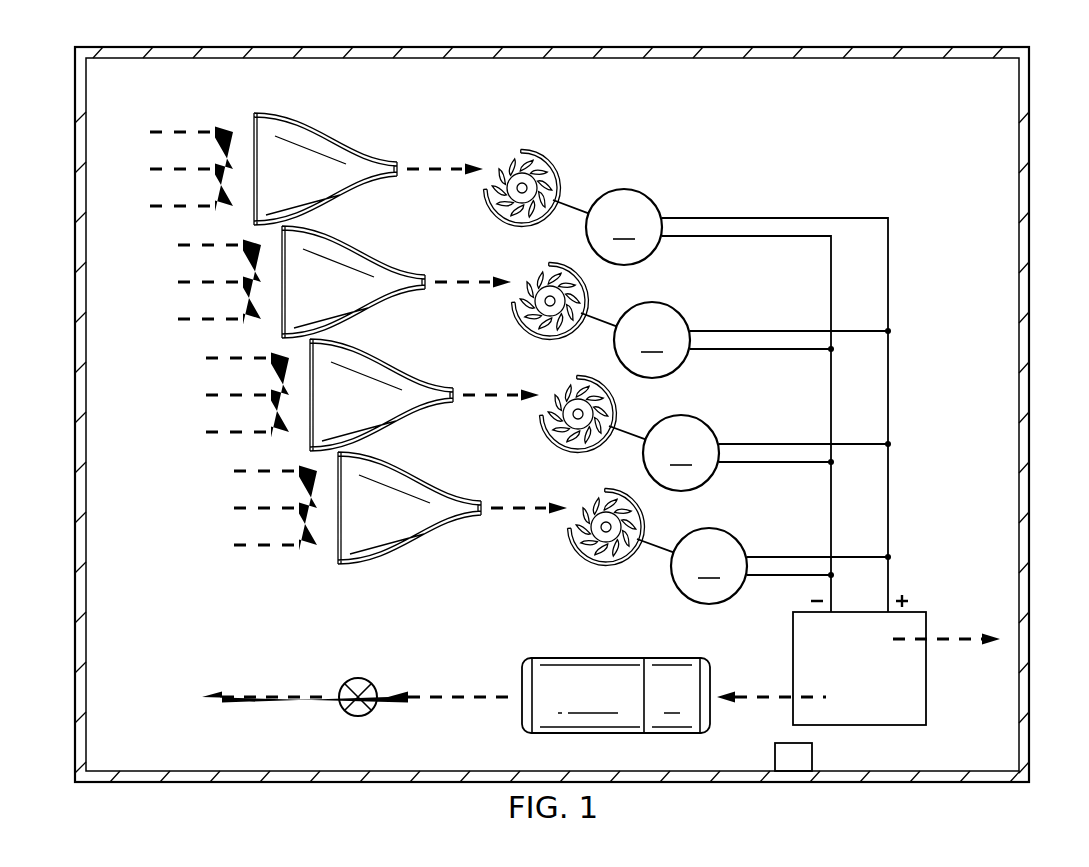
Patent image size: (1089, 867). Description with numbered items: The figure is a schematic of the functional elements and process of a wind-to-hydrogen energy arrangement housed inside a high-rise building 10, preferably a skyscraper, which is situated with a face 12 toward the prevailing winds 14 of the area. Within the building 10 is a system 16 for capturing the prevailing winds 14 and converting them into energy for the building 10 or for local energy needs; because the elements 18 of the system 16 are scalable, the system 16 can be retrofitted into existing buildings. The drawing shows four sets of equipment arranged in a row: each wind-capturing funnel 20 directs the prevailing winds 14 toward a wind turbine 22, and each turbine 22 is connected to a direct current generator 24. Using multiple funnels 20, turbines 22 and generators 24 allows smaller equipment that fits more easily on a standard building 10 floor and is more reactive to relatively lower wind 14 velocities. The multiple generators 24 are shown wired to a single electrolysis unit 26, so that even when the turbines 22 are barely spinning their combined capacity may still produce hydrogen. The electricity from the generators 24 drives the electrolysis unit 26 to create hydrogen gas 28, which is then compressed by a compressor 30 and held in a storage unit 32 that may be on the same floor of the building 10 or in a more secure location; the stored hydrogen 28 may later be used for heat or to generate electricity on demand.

The high-rise building 10 is at (1036, 386).
The face 12 is at (76, 386).
The prevailing winds 14 is at (186, 118).
The system 16 is at (590, 158).
The elements 18 is at (486, 576).
The wind-capturing funnel 20 is at (337, 143).
The wind turbine 22 is at (486, 192).
The direct current generator 24 is at (666, 396).
The electrolysis unit 26 is at (927, 686).
The hydrogen gas 28 is at (748, 694).
The compressor 30 is at (672, 664).
The storage unit 32 is at (586, 664).